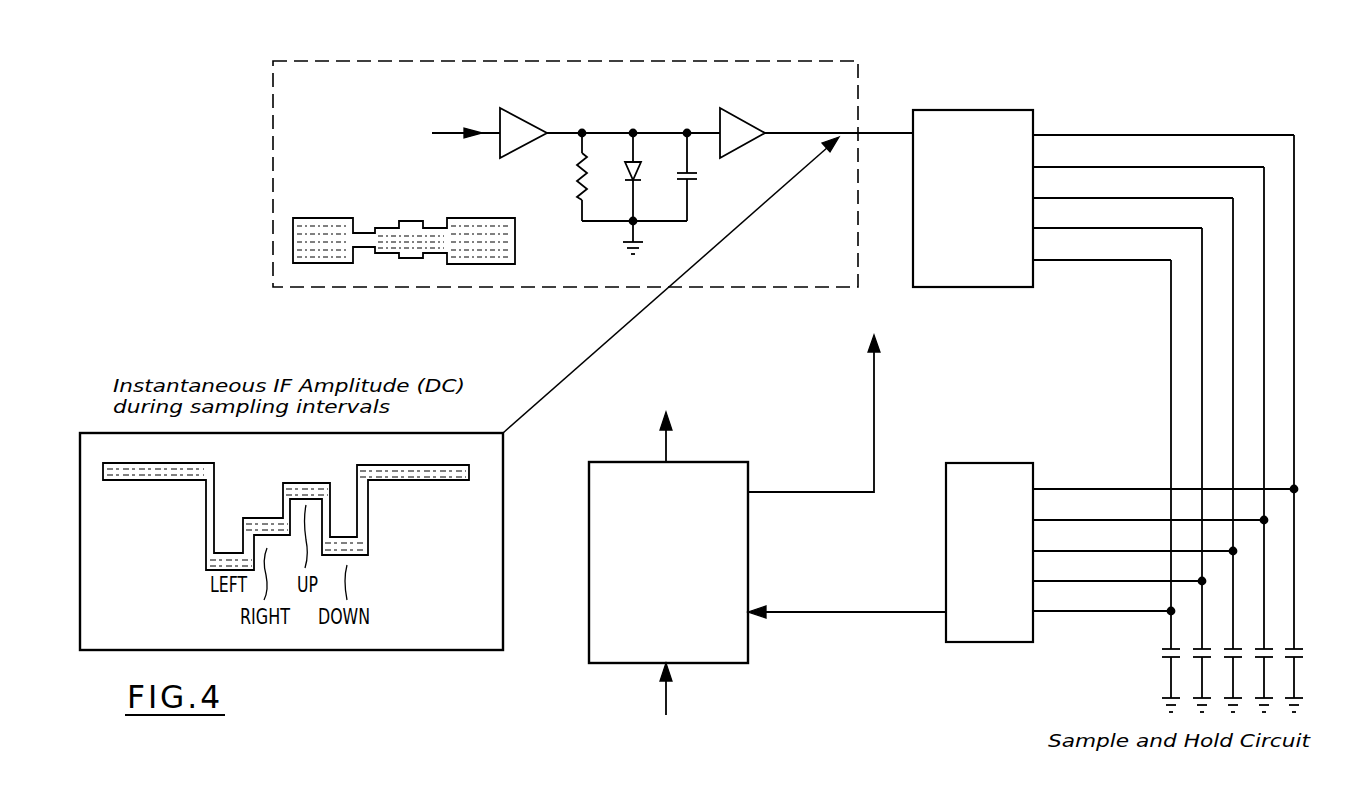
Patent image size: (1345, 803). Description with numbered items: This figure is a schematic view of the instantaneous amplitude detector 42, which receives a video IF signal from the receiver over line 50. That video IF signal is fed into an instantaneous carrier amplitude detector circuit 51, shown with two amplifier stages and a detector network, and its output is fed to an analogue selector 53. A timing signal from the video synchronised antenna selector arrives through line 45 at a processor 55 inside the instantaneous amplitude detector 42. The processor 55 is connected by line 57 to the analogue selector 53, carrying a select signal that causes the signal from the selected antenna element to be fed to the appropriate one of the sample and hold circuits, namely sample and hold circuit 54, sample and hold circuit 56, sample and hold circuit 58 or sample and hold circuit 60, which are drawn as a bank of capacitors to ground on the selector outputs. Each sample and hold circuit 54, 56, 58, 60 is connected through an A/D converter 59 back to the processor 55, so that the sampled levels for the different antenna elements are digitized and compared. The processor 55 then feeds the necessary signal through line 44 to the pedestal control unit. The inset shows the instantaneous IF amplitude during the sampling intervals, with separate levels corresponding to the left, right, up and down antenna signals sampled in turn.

The instantaneous amplitude detector 42 is at (886, 97).
The line 50 is at (450, 133).
The instantaneous carrier amplitude detector circuit 51 is at (607, 223).
The analogue selector 53 is at (983, 110).
The processor 55 is at (607, 461).
The line 44 is at (667, 447).
The line 45 is at (672, 697).
The line 57 is at (874, 373).
The A/D converter 59 is at (1005, 462).
The sample and hold circuit 54 is at (1294, 599).
The sample and hold circuit 56 is at (1264, 623).
The sample and hold circuit 58 is at (1202, 600).
The sample and hold circuit 60 is at (1171, 629).